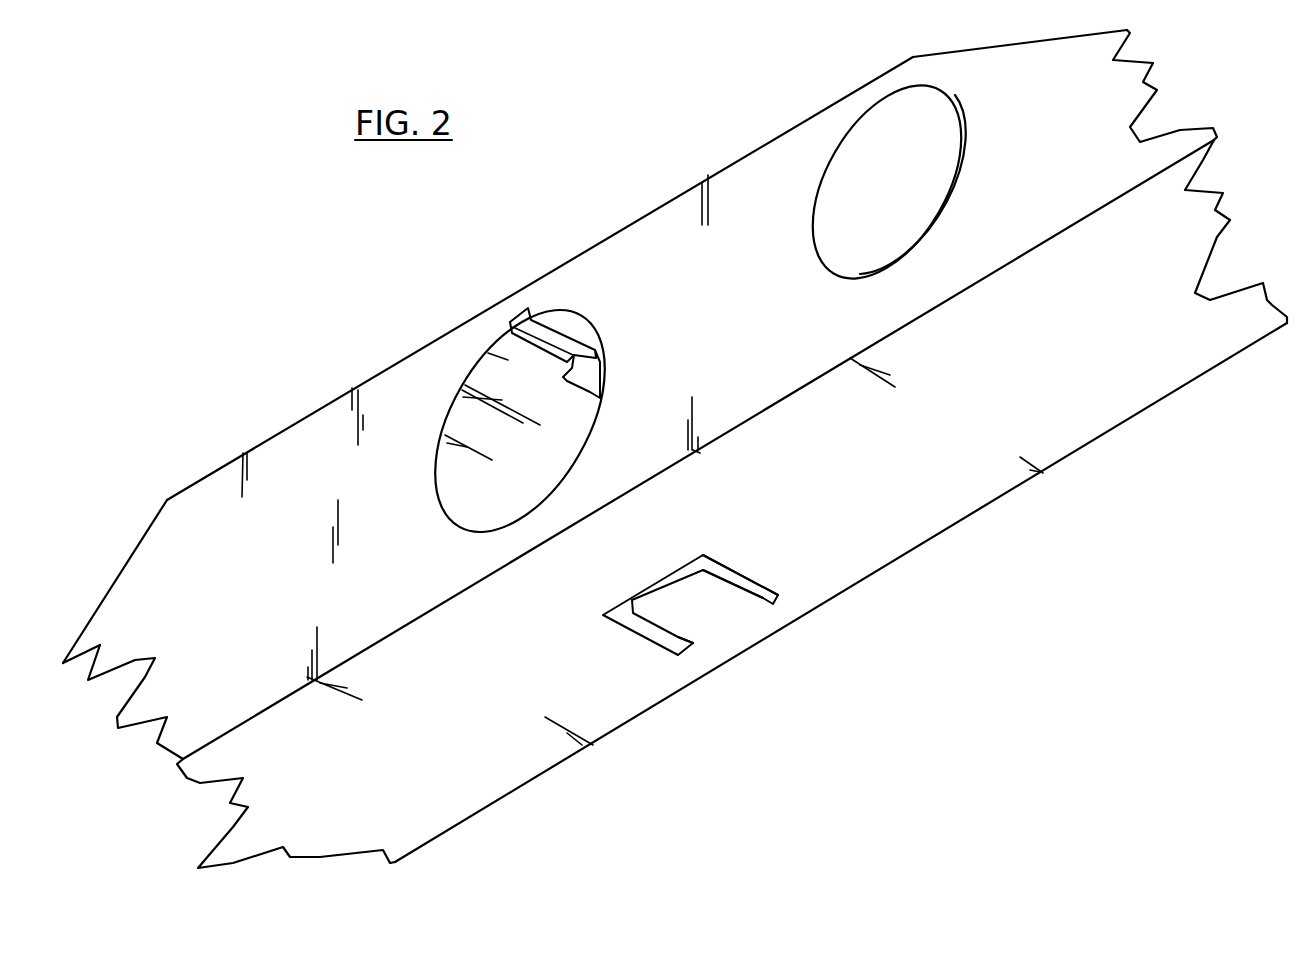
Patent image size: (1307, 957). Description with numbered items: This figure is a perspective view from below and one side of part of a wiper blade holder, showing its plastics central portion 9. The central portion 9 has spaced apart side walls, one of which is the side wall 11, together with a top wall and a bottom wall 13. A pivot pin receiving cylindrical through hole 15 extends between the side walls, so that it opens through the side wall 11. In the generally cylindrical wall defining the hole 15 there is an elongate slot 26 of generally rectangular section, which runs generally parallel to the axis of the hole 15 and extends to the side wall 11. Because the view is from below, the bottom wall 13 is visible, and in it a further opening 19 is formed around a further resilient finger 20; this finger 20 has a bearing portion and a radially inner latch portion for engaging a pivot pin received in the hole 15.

The plastics central portion 9 is at (323, 420).
The side wall 11 is at (653, 243).
The bottom wall 13 is at (883, 543).
The pivot pin receiving cylindrical through hole 15 is at (458, 475).
The further opening 19 is at (655, 637).
The further resilient finger 20 is at (700, 595).
The elongate slot 26 is at (513, 330).